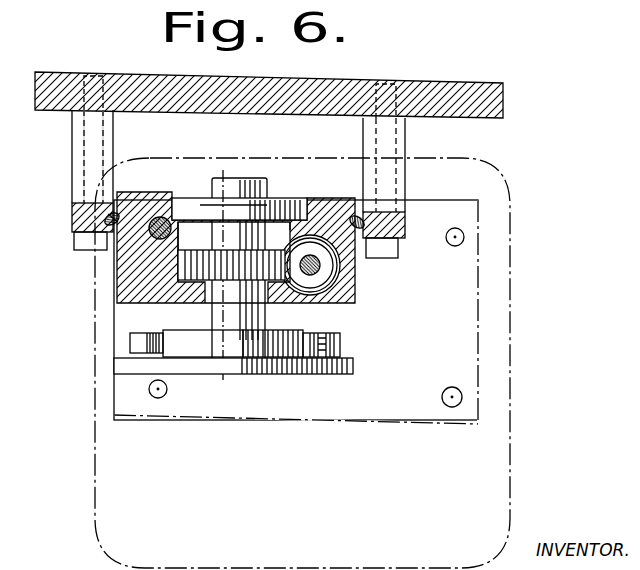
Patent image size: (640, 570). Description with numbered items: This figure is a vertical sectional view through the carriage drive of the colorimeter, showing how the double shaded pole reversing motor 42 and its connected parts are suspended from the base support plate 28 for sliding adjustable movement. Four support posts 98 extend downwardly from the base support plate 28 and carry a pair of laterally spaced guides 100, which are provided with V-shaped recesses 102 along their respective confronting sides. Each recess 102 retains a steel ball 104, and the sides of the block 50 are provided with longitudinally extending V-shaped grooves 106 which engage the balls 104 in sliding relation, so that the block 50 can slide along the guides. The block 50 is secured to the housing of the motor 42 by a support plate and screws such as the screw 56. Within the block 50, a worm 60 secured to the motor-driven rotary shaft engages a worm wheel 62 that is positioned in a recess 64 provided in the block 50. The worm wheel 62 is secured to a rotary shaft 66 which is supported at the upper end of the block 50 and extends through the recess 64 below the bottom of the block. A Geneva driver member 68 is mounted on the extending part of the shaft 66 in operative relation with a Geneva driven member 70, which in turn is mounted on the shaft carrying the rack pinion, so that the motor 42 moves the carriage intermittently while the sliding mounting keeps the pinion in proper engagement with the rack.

The base support plate 28 is at (441, 83).
The support posts 98 is at (80, 158).
The guides 100 is at (72, 221).
The V-shaped recesses 102 is at (110, 224).
The steel ball 104 is at (120, 211).
The V-shaped grooves 106 is at (354, 214).
The double shaded pole reversing motor 42 is at (512, 216).
The block 50 is at (360, 288).
The screw 56 is at (164, 217).
The worm 60 is at (300, 244).
The worm wheel 62 is at (188, 258).
The recess 64 is at (272, 225).
The rotary shaft 66 is at (222, 187).
The Geneva driver member 68 is at (293, 337).
The Geneva driven member 70 is at (338, 339).